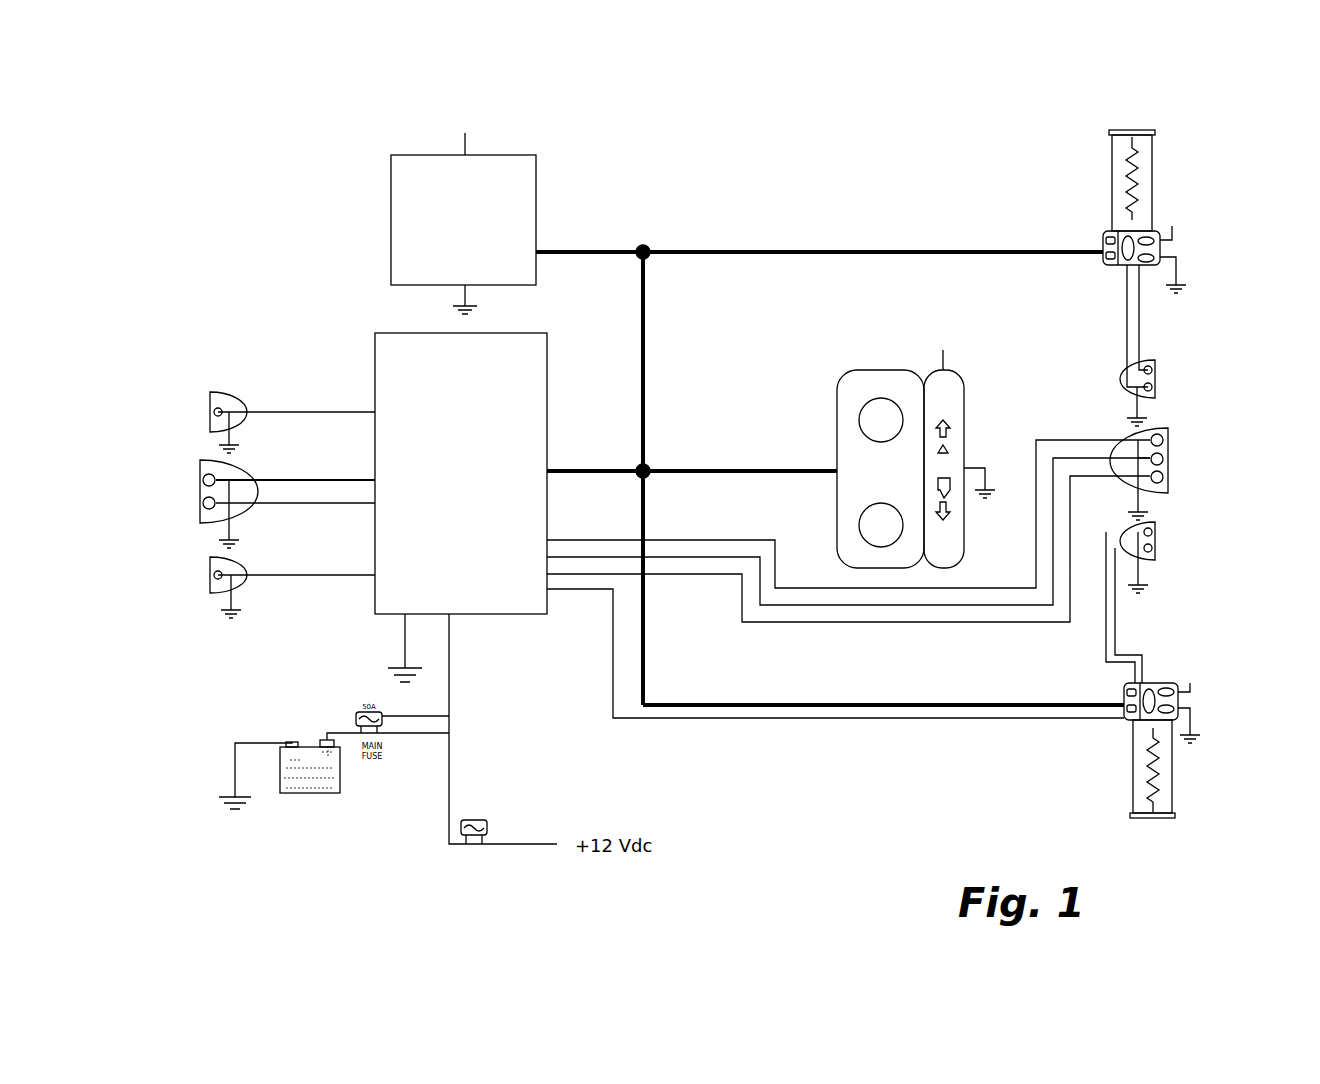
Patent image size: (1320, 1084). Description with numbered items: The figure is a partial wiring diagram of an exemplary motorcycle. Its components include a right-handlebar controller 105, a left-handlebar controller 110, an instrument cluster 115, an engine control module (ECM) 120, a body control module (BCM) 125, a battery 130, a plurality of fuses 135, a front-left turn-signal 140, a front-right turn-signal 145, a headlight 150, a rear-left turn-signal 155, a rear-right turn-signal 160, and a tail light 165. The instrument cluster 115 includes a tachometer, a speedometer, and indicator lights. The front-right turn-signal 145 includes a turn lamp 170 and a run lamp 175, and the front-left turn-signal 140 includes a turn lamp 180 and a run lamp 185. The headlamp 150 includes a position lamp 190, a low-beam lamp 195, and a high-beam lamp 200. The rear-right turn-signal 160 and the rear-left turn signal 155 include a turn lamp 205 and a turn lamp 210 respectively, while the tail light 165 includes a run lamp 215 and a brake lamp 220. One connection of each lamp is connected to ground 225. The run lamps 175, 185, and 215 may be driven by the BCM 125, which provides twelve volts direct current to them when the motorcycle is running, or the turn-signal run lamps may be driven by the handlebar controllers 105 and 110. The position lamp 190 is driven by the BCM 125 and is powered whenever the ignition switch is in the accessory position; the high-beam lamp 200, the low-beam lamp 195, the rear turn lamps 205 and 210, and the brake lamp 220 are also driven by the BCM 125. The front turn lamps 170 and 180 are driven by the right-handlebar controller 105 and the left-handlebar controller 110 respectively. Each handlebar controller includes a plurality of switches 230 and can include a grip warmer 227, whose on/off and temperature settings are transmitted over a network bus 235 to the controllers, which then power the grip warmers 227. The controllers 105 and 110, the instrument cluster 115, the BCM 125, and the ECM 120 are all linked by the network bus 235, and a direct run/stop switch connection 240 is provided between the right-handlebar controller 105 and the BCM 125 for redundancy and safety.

The right-handlebar controller 105 is at (1113, 745).
The left-handlebar controller 110 is at (1212, 271).
The instrument cluster 115 is at (837, 430).
The engine control module (ECM) 120 is at (536, 193).
The body control module (BCM) 125 is at (547, 402).
The battery 130 is at (313, 795).
The fuses 135 is at (483, 818).
The front-left turn-signal 140 is at (1120, 380).
The front-right turn-signal 145 is at (1150, 562).
The headlight 150 is at (1130, 432).
The rear-left turn-signal 155 is at (228, 393).
The rear-right turn-signal 160 is at (243, 583).
The tail light 165 is at (198, 493).
The turn lamp 170 is at (1153, 550).
The run lamp 175 is at (1153, 533).
The turn lamp 180 is at (1153, 369).
The run lamp 185 is at (1153, 389).
The position lamp 190 is at (1164, 440).
The low-beam lamp 195 is at (1164, 479).
The high-beam lamp 200 is at (1163, 461).
The turn lamp 205 is at (214, 576).
The turn lamp 210 is at (214, 411).
The run lamp 215 is at (204, 478).
The brake lamp 220 is at (205, 506).
The ground 225 is at (233, 778).
The grip warmer 227 is at (1130, 180).
The switches 230 is at (1106, 255).
The network bus 235 is at (698, 478).
The run/stop switch connection 240 is at (835, 720).